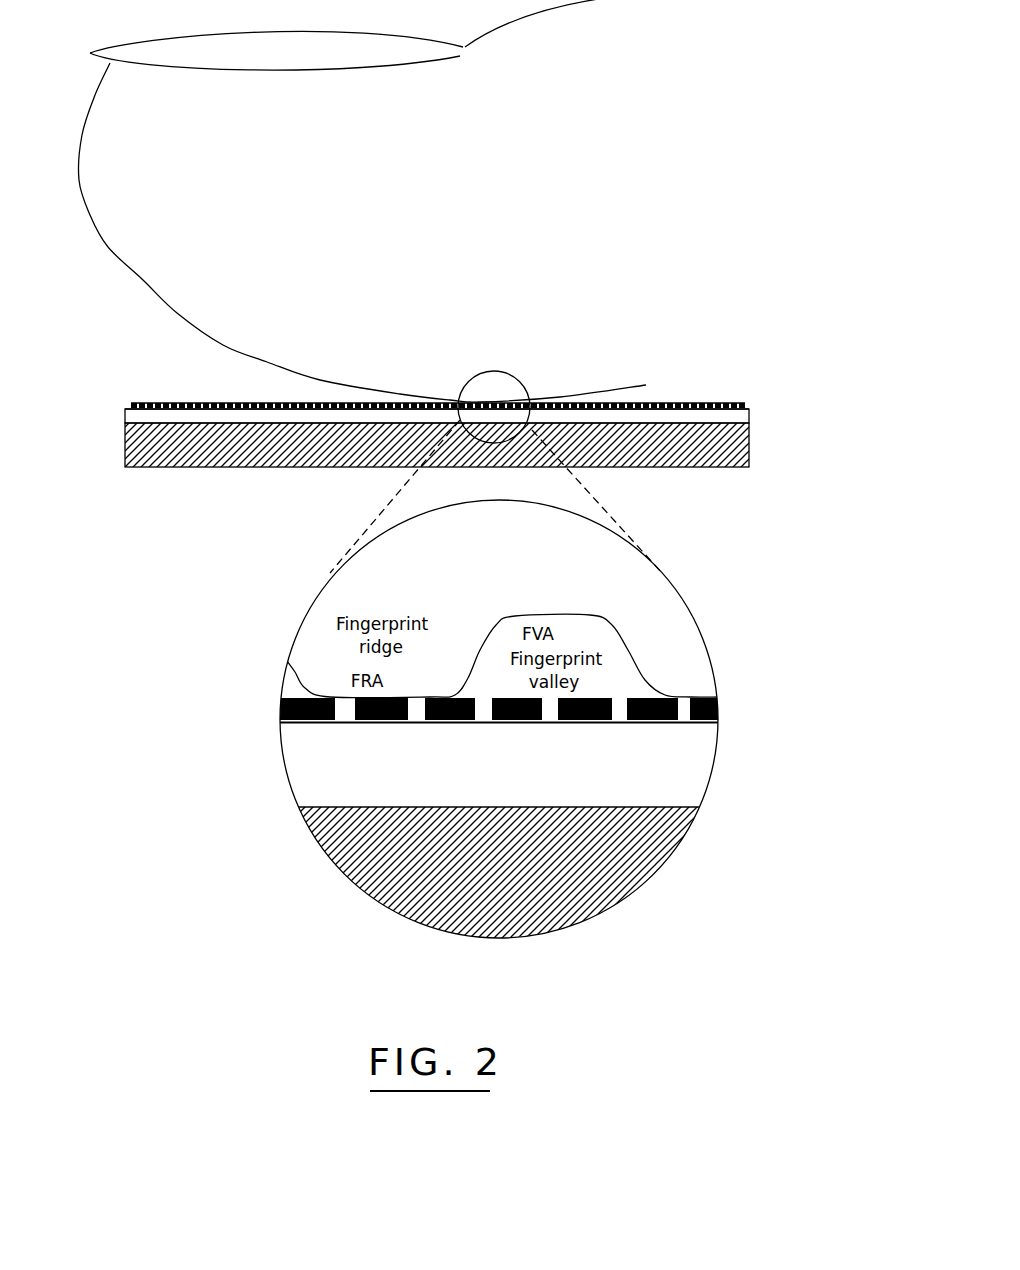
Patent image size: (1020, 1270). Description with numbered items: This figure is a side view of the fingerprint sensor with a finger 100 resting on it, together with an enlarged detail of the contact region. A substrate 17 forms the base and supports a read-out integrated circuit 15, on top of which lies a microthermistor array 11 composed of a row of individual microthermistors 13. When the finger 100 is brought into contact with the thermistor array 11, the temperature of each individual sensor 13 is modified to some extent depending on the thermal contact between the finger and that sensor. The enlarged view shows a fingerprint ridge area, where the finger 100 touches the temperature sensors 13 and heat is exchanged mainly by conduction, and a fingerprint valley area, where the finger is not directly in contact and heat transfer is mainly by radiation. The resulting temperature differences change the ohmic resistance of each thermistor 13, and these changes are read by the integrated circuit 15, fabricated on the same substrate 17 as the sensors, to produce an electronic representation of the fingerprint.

The finger 100 is at (176, 313).
The microthermistor array 11 is at (167, 400).
The microthermistor 13 is at (690, 403).
The read-out integrated circuit 15 is at (127, 417).
The substrate 17 is at (242, 467).